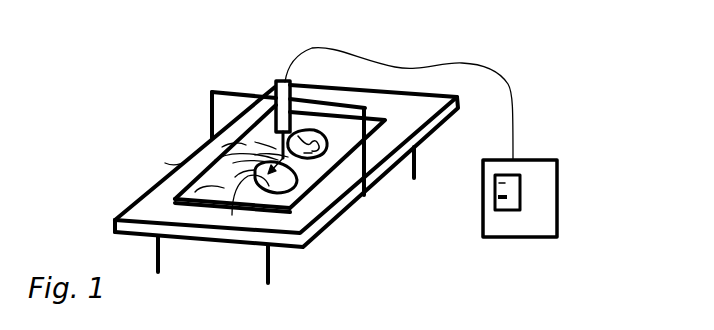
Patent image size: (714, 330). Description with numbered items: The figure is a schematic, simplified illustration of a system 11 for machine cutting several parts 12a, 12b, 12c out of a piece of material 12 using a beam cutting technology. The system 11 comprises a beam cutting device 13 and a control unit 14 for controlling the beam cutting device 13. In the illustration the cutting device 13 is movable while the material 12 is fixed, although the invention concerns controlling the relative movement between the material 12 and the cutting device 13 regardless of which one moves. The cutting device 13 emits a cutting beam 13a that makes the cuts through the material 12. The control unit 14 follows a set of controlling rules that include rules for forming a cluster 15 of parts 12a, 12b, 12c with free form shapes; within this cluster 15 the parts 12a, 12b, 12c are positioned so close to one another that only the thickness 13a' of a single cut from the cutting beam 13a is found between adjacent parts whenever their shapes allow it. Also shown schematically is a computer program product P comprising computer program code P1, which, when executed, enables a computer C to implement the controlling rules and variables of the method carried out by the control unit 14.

The system 11 is at (177, 121).
The piece of material 12 is at (184, 203).
The part 12a is at (322, 129).
The part 12b is at (347, 163).
The part 12c is at (321, 165).
The beam cutting device 13 is at (277, 91).
The cutting beam 13a is at (198, 158).
The thickness of one cut 13a' is at (250, 250).
The control unit 14 is at (558, 204).
The cluster 15 is at (168, 191).
The computer program product P is at (522, 183).
The computer program code P1 is at (499, 210).
The computer C is at (484, 213).